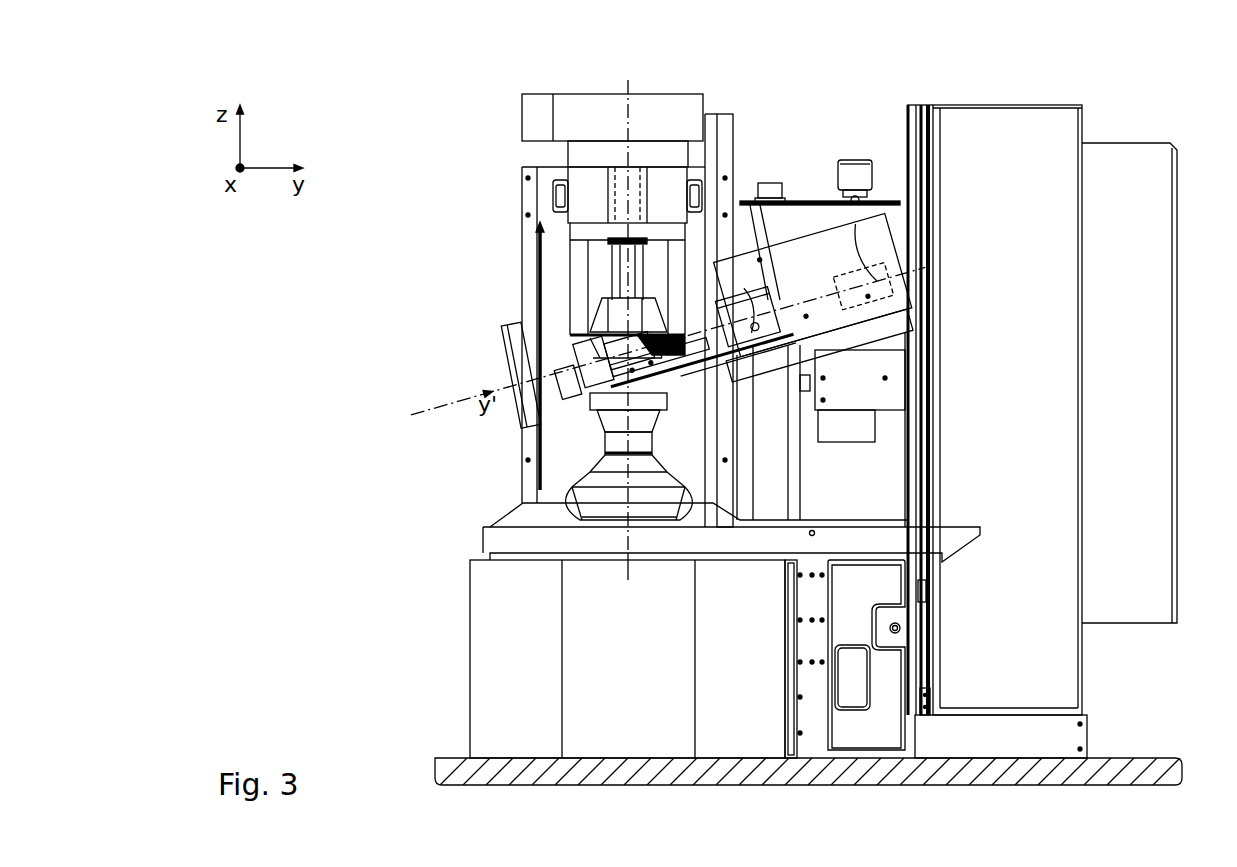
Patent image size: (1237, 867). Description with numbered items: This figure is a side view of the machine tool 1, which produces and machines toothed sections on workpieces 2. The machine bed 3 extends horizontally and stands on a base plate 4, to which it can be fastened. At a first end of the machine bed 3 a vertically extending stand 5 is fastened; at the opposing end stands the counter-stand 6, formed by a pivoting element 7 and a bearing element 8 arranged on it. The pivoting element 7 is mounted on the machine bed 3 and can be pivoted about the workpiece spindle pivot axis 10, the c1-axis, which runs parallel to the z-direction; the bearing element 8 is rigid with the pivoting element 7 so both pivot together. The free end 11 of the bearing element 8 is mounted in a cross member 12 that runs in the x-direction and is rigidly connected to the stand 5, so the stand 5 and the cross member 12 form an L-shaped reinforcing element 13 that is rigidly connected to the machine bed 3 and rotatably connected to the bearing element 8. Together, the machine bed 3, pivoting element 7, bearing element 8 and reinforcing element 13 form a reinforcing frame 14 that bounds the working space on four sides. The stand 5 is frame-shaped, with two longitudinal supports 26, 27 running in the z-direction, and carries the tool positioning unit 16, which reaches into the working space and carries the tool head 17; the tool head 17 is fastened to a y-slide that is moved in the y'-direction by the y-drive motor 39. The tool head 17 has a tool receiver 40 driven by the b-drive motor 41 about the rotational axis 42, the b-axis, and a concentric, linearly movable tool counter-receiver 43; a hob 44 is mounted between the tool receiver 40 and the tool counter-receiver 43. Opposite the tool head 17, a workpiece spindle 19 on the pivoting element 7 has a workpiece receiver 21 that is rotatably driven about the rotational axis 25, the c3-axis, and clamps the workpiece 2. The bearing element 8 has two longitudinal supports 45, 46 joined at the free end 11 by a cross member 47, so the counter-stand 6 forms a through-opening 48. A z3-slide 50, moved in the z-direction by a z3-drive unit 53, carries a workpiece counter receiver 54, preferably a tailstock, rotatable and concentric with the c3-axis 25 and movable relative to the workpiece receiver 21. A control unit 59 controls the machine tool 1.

The machine tool 1 is at (788, 97).
The workpiece 2 is at (598, 392).
The machine bed 3 is at (570, 670).
The base plate 4 is at (445, 770).
The stand 5 is at (742, 143).
The counter-stand 6 is at (514, 425).
The pivoting element 7 is at (488, 547).
The bearing element 8 is at (605, 300).
The workpiece spindle pivot axis 10 is at (627, 577).
The free end 11 is at (693, 173).
The cross member 12 is at (680, 100).
The reinforcing element 13 is at (565, 90).
The reinforcing frame 14 is at (531, 437).
The tool positioning unit 16 is at (839, 221).
The tool head 17 is at (738, 284).
The workpiece spindle 19 is at (720, 453).
The workpiece receiver 21 is at (591, 453).
The rotational axis 25 is at (629, 127).
The longitudinal support 26 is at (598, 263).
The longitudinal support 27 is at (692, 497).
The y-drive motor 39 is at (882, 207).
The tool receiver 40 is at (590, 355).
The b-drive motor 41 is at (765, 300).
The rotational axis 42 is at (528, 400).
The tool counter-receiver 43 is at (518, 328).
The hob 44 is at (600, 373).
The longitudinal support 45 is at (572, 413).
The longitudinal support 46 is at (495, 540).
The cross member 47 is at (575, 177).
The through-opening 48 is at (681, 463).
The z3-slide 50 is at (715, 330).
The z3-drive unit 53 is at (615, 183).
The workpiece counter receiver 54 is at (535, 326).
The control unit 59 is at (990, 125).